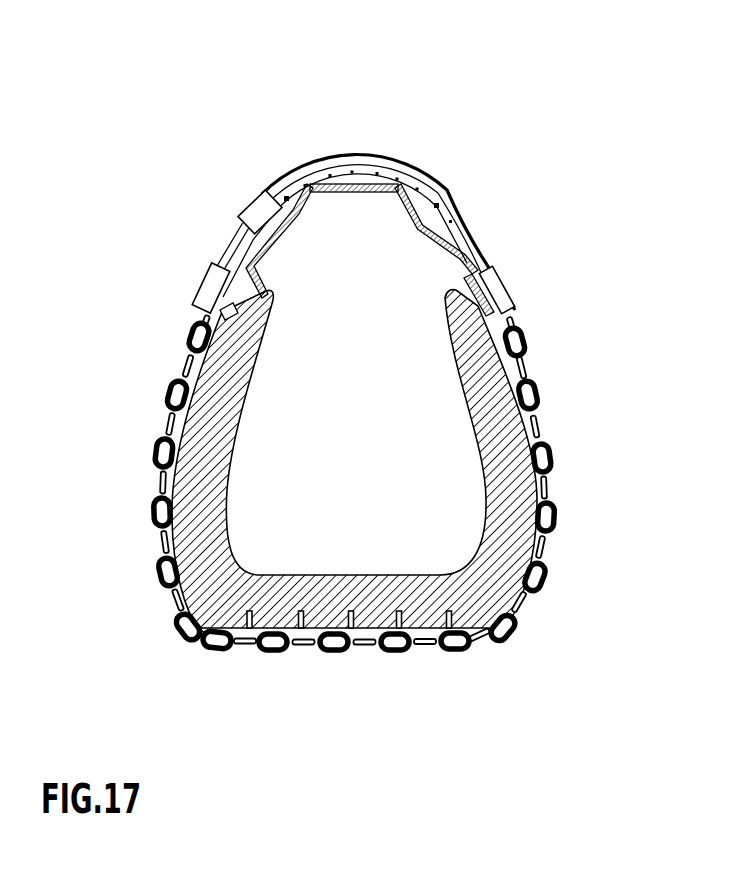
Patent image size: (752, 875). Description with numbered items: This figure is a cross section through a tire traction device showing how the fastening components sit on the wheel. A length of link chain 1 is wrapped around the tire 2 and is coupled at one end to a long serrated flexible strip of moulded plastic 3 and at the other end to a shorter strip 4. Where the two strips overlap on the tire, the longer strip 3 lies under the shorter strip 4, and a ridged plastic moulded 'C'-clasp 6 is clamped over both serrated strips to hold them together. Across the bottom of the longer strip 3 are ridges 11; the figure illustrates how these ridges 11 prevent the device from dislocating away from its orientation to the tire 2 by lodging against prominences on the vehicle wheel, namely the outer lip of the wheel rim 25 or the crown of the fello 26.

The link chain 1 is at (175, 607).
The tire 2 is at (495, 541).
The long serrated flexible strip of moulded plastic 3 is at (497, 288).
The shorter strip 4 is at (213, 290).
The ridged plastic moulded 'C'-clasp 6 is at (260, 210).
The ridges 11 is at (435, 208).
The outer lip of the wheel rim 25 is at (511, 321).
The crown of the fello 26 is at (405, 173).